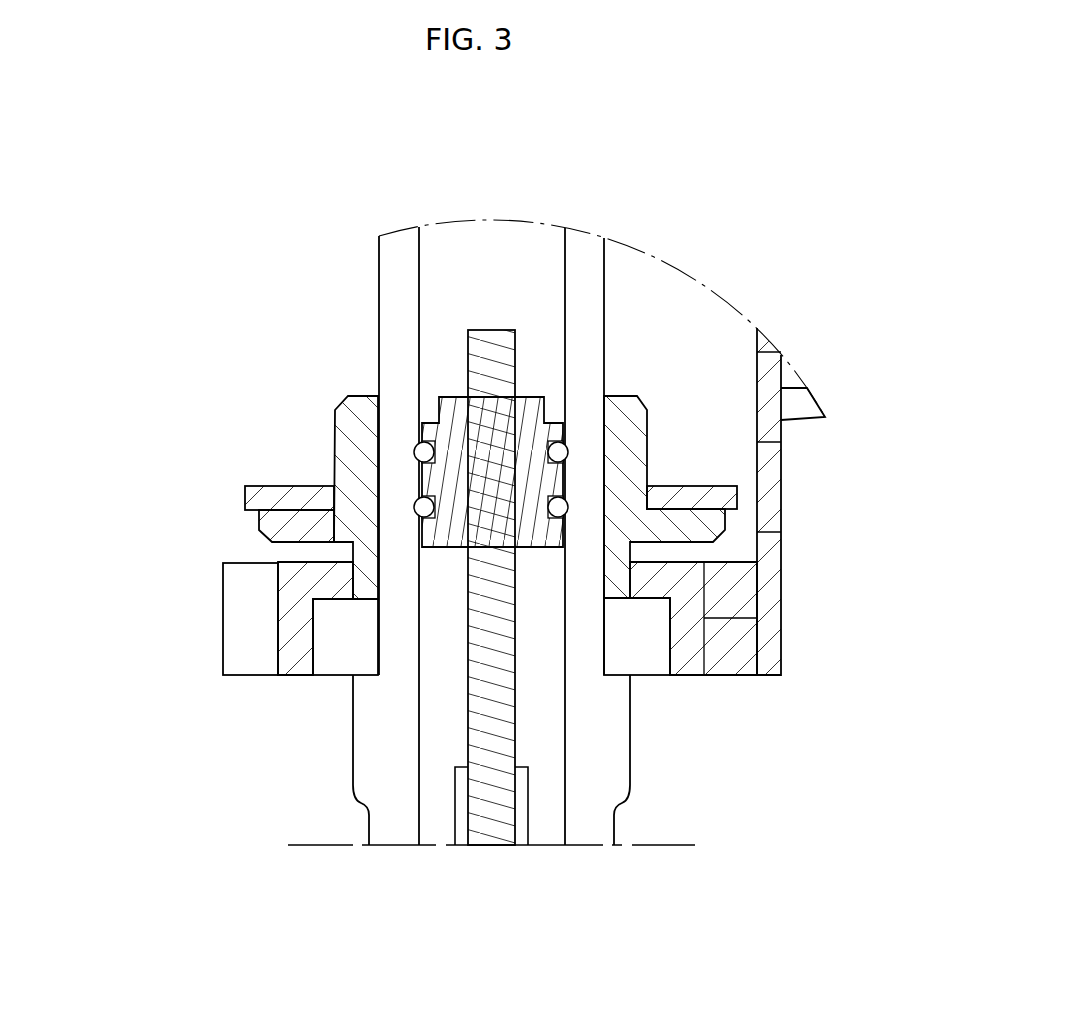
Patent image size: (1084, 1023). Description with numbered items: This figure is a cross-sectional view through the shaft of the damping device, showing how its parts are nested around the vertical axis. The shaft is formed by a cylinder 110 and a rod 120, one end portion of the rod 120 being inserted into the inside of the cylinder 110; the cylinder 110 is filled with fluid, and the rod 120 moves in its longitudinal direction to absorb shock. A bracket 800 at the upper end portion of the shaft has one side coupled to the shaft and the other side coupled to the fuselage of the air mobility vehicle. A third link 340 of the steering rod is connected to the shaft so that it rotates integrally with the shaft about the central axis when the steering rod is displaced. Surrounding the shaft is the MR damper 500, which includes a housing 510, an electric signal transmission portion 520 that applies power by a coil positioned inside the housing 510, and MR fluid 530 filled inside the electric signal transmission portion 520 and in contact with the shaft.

The cylinder 110 is at (583, 248).
The rod 120 is at (492, 830).
The third link 340 is at (677, 497).
The MR damper 500 is at (420, 730).
The housing 510 is at (240, 625).
The electric signal transmission portion 520 is at (298, 657).
The MR fluid 530 is at (338, 655).
The bracket 800 is at (781, 481).